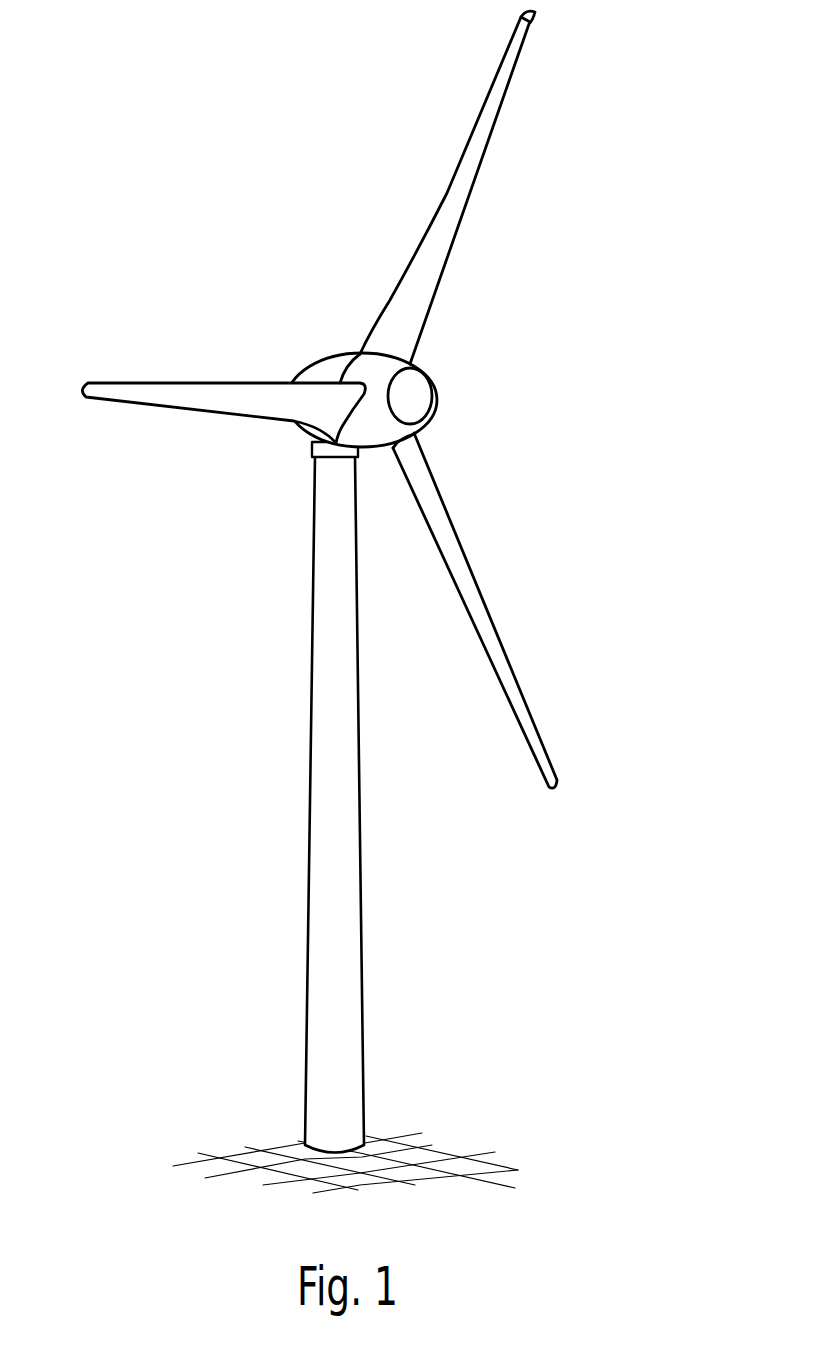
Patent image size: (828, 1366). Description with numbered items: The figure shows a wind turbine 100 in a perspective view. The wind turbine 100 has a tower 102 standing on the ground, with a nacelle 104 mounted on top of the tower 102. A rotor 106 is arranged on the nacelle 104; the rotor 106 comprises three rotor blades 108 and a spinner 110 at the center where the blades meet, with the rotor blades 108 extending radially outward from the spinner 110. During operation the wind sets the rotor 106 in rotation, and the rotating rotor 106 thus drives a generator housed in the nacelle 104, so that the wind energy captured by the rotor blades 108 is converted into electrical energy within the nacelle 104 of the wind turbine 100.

The wind turbine 100 is at (373, 581).
The tower 102 is at (353, 895).
The nacelle 104 is at (320, 370).
The rotor 106 is at (373, 399).
The rotor blades 108 is at (458, 186).
The spinner 110 is at (417, 395).